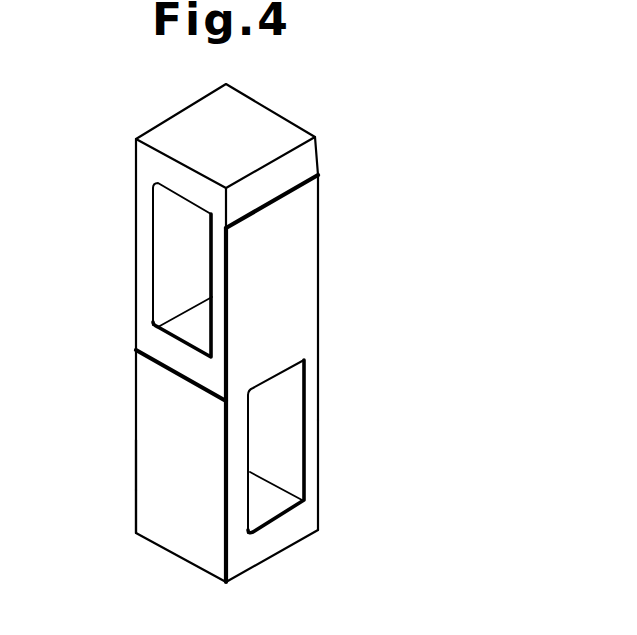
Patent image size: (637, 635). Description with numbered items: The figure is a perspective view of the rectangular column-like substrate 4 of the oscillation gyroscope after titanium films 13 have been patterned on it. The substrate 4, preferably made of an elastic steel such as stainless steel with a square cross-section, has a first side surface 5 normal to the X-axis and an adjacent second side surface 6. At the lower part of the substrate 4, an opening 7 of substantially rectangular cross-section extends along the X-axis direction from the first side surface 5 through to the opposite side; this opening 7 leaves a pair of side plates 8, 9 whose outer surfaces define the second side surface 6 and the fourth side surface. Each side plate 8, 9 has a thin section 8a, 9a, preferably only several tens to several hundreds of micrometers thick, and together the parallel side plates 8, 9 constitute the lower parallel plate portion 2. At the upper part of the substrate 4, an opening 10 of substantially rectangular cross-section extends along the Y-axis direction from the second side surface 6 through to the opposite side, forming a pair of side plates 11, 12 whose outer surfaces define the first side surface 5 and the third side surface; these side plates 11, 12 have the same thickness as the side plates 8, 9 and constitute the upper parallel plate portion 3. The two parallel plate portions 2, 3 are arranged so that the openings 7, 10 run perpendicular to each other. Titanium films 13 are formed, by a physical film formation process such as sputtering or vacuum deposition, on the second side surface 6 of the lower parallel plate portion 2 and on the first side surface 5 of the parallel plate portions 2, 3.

The lower parallel plate portion 2 is at (283, 378).
The upper parallel plate portion 3 is at (275, 287).
The substrate 4 is at (136, 368).
The first side surface 5 is at (303, 518).
The second side surface 6 is at (148, 512).
The opening 7 is at (290, 432).
The side plate 8 is at (136, 410).
The thin section 8a is at (255, 428).
The side plate 9 is at (320, 388).
The thin section 9a is at (322, 470).
The opening 10 is at (158, 290).
The side plate 11 is at (220, 300).
The side plate 12 is at (136, 210).
The titanium film 13 is at (303, 238).